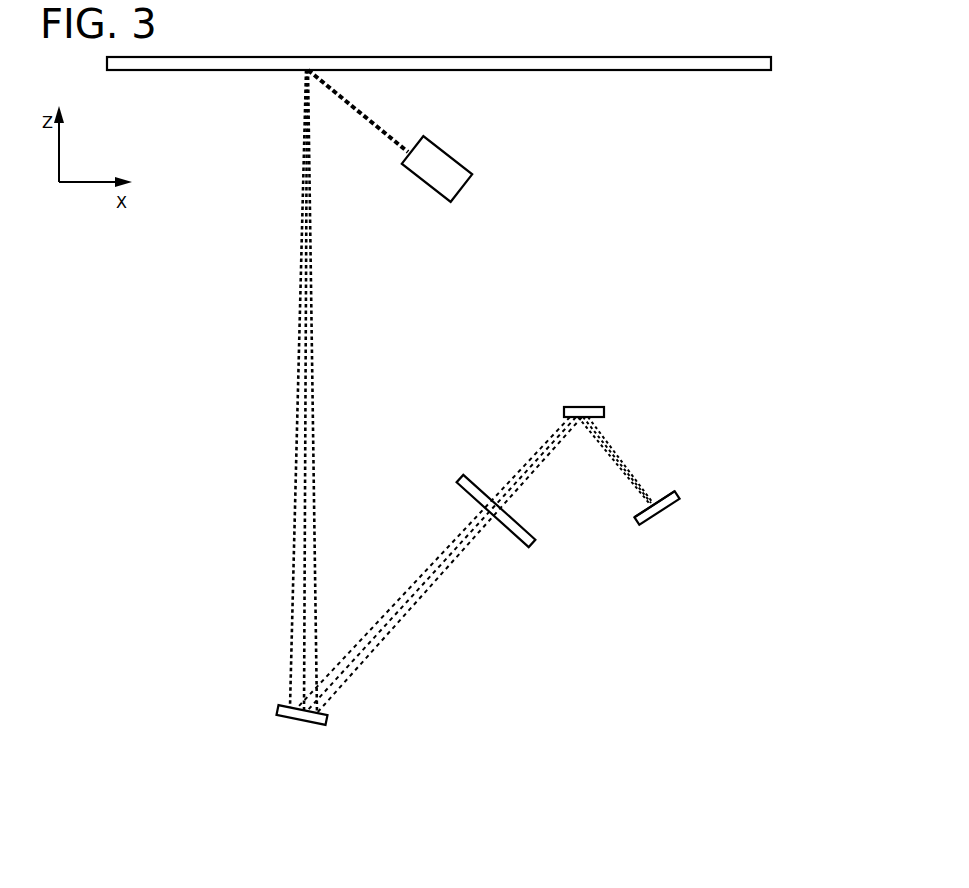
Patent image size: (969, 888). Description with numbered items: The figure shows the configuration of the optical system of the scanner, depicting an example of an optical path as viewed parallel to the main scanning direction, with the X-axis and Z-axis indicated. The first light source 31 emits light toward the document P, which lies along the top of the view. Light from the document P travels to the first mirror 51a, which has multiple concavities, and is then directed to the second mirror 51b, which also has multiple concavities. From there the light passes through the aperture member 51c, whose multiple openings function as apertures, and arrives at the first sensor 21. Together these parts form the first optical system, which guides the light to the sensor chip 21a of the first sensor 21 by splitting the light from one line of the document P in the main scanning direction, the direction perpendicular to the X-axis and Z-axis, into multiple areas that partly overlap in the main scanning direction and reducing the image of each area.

The document P is at (459, 46).
The first light source 31 is at (467, 169).
The first mirror 51a is at (259, 730).
The second mirror 51b is at (617, 392).
The aperture member 51c is at (532, 541).
The first sensor 21 is at (691, 517).
The sensor chip 21a is at (692, 484).